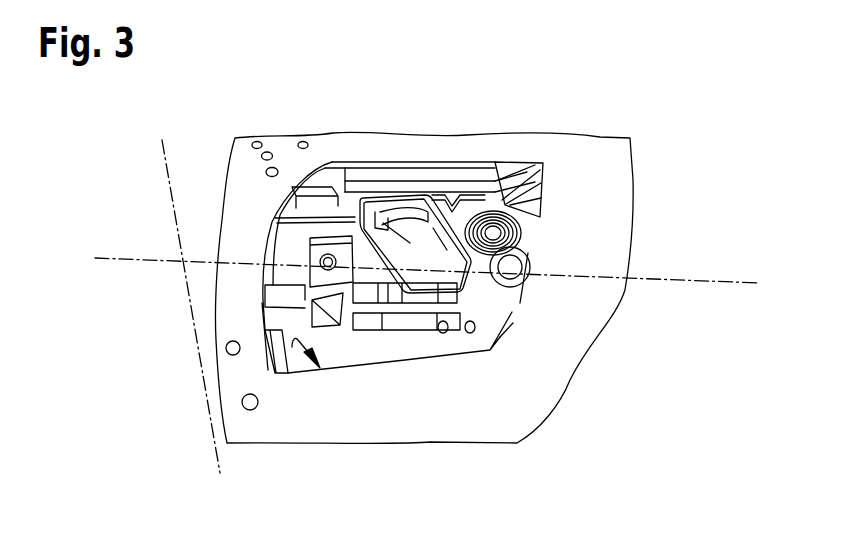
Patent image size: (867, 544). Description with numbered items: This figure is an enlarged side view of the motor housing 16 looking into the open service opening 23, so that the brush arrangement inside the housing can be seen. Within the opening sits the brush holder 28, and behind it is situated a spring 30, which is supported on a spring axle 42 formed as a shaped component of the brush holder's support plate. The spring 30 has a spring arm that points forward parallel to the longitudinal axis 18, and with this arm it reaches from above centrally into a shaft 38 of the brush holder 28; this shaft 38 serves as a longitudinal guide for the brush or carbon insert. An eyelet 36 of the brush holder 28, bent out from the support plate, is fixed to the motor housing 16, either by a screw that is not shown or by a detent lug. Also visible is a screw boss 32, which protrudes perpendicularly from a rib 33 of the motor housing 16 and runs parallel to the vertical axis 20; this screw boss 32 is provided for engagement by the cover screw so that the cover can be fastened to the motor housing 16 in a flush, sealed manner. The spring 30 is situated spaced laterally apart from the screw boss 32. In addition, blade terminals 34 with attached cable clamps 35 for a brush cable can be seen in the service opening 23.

The motor housing 16 is at (477, 433).
The longitudinal axis 18 is at (121, 259).
The vertical axis 20 is at (173, 204).
The service opening 23 is at (293, 330).
The brush holder 28 is at (424, 182).
The spring 30 is at (500, 213).
The screw boss 32 is at (528, 285).
The rib 33 is at (490, 310).
The blade terminals 34 is at (425, 320).
The cable clamps 35 is at (380, 300).
The eyelet 36 is at (328, 268).
The shaft 38 is at (388, 213).
The spring axle 42 is at (528, 257).